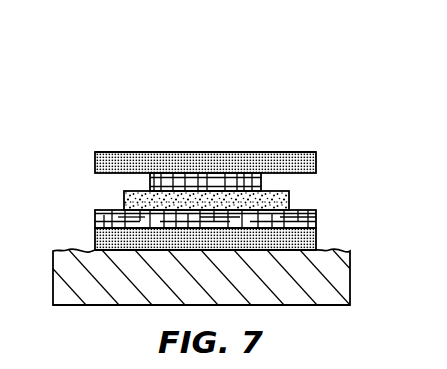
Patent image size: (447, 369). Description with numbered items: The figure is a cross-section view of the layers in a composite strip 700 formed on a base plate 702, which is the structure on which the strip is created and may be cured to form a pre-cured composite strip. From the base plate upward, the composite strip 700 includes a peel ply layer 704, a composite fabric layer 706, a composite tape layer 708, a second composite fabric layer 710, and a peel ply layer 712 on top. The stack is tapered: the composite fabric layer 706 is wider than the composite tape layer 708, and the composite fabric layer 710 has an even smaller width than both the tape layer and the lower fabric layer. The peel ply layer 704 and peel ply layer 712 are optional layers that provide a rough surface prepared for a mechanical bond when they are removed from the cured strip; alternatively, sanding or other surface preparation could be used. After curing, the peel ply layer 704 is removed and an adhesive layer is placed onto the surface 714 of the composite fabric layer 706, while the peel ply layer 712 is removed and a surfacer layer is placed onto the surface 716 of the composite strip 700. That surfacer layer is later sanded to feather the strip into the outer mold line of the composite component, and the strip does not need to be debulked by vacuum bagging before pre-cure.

The composite strip 700 is at (182, 80).
The base plate 702 is at (350, 295).
The peel ply layer 704 is at (95, 240).
The composite fabric layer 706 is at (317, 222).
The composite tape layer 708 is at (124, 200).
The composite fabric layer 710 is at (262, 180).
The peel ply layer 712 is at (95, 162).
The surface 714 is at (117, 306).
The surface 716 is at (138, 152).